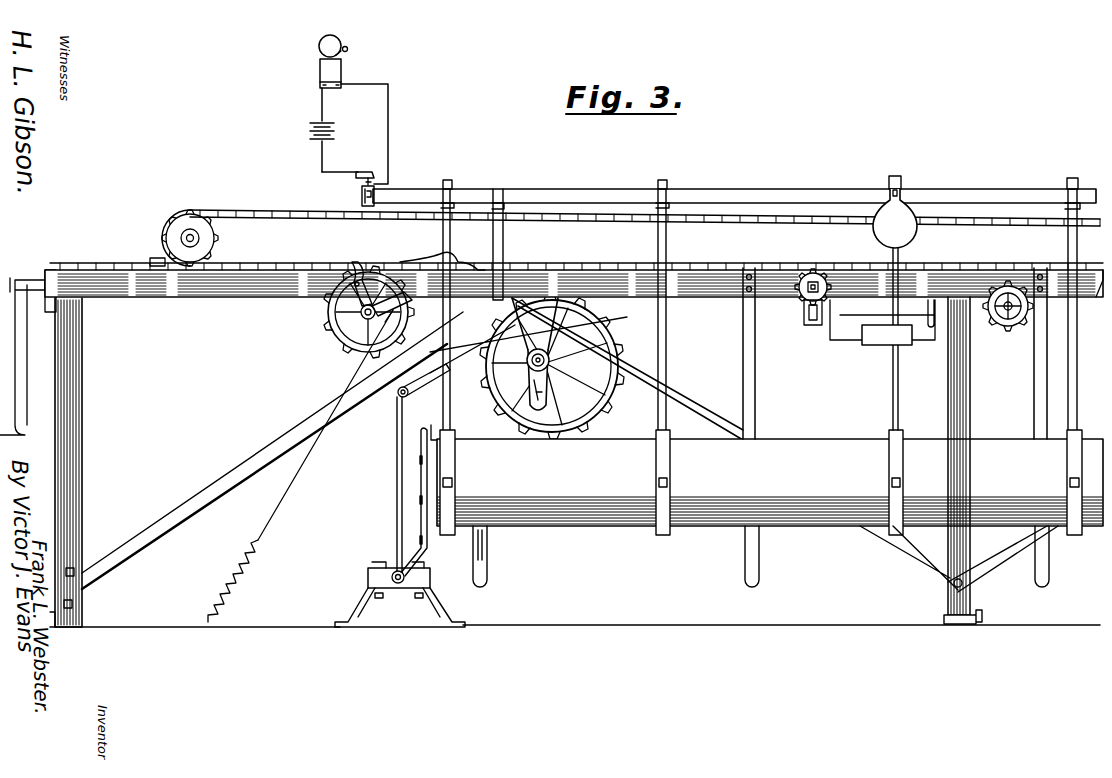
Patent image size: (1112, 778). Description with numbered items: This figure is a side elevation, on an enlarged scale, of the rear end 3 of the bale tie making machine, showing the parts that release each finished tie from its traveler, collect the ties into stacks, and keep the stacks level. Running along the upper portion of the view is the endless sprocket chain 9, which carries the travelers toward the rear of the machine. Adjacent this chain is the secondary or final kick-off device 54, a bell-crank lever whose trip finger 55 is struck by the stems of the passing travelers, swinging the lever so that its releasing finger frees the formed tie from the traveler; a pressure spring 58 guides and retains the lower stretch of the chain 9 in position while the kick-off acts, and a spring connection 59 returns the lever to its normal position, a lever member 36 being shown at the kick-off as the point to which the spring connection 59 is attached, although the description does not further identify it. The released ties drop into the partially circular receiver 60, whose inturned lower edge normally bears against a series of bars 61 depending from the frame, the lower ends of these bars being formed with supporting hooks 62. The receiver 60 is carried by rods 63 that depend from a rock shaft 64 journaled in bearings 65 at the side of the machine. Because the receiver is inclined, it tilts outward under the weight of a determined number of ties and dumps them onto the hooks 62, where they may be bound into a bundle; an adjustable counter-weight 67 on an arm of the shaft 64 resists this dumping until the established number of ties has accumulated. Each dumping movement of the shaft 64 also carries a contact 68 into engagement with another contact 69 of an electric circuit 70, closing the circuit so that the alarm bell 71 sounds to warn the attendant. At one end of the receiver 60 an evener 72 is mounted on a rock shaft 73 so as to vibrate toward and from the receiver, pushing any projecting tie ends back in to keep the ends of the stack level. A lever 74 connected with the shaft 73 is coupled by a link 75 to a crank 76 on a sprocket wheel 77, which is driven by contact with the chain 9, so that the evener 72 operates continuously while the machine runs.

The rear end 3 is at (49, 270).
The endless sprocket chain 9 is at (817, 226).
The lever 36 is at (412, 302).
The secondary kick-off device 54 is at (345, 312).
The trip finger 55 is at (356, 264).
The pressure spring 58 is at (430, 262).
The spring connection 59 is at (272, 516).
The receiver 60 is at (787, 450).
The bars 61 is at (752, 366).
The supporting hooks 62 is at (488, 581).
The rods 63 is at (666, 330).
The rock shaft 64 is at (730, 194).
The bearings 65 is at (500, 189).
The adjustable counter-weight 67 is at (905, 233).
The contact 68 is at (381, 184).
The contact 69 is at (365, 172).
The electric circuit 70 is at (330, 130).
The alarm bell 71 is at (340, 72).
The evener 72 is at (424, 484).
The rock shaft 73 is at (398, 590).
The lever 74 is at (394, 432).
The link 75 is at (438, 386).
The crank 76 is at (600, 334).
The sprocket wheel 77 is at (582, 422).